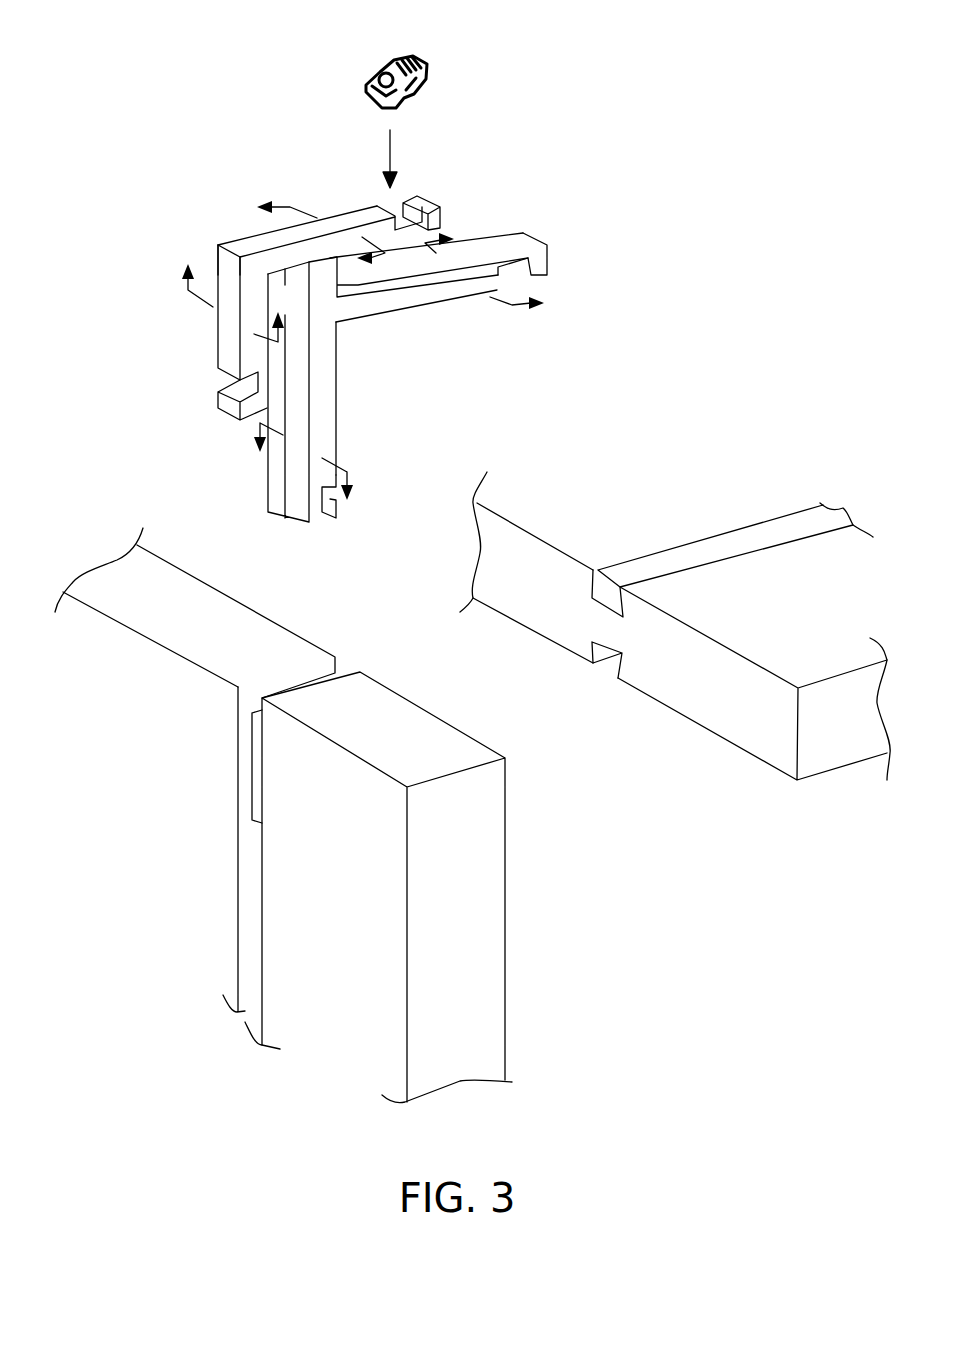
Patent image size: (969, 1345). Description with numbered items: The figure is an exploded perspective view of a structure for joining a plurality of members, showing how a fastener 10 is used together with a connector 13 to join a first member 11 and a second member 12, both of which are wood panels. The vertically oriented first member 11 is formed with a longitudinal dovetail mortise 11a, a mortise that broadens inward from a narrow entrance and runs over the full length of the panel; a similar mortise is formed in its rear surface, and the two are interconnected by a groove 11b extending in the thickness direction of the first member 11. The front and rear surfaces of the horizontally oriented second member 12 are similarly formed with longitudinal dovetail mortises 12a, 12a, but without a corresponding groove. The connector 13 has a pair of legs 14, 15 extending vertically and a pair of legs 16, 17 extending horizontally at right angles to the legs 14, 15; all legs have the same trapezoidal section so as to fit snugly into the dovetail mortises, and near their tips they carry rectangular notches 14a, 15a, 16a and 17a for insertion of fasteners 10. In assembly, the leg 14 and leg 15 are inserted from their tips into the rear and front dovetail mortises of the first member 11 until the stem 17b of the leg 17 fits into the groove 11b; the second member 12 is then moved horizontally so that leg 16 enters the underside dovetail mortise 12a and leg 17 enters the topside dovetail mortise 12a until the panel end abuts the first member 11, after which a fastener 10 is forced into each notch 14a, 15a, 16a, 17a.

The fastener 10 is at (401, 55).
The first member 11 is at (490, 920).
The longitudinal dovetail mortise 11a is at (250, 775).
The groove 11b is at (288, 690).
The second member 12 is at (745, 735).
The longitudinal dovetail mortise 12a is at (640, 570).
The connector 13 is at (209, 90).
The leg 14 is at (330, 349).
The rectangular notch 14a is at (334, 516).
The leg 15 is at (230, 325).
The rectangular notch 15a is at (228, 382).
The leg 16 is at (522, 240).
The rectangular notch 16a is at (523, 273).
The leg 17 is at (357, 210).
The rectangular notch 17a is at (393, 202).
The stem 17b is at (240, 243).